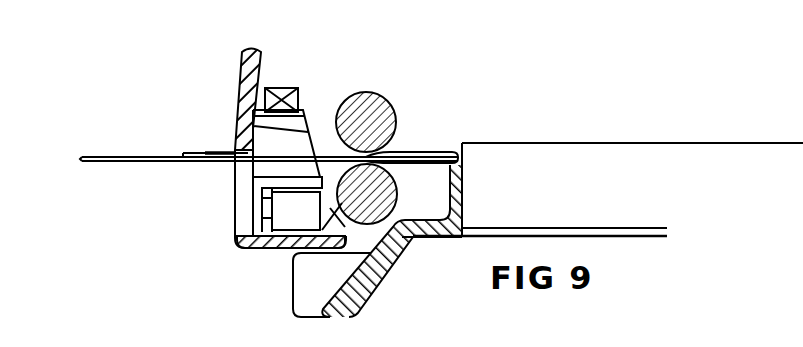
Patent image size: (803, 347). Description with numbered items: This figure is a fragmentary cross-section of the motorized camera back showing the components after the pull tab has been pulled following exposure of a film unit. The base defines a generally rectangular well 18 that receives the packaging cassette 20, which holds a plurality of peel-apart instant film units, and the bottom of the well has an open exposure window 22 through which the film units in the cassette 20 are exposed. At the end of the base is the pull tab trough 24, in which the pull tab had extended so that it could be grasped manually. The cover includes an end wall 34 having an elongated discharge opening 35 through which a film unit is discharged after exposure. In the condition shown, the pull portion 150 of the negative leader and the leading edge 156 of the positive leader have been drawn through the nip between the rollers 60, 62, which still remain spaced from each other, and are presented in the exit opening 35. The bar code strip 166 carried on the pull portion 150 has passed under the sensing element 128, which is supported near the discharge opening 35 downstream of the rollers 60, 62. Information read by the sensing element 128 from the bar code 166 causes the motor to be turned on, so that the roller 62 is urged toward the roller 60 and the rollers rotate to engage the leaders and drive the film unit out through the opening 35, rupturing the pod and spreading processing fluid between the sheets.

The well 18 is at (465, 199).
The packaging cassette 20 is at (509, 160).
The exposure window 22 is at (617, 237).
The pull tab trough 24 is at (376, 282).
The end wall 34 is at (252, 61).
The discharge opening 35 is at (250, 177).
The roller 60 is at (386, 111).
The roller 62 is at (398, 191).
The sensing element 128 is at (283, 90).
The pull portion 150 is at (98, 163).
The leading edge 156 is at (188, 153).
The bar code strip 166 is at (220, 152).